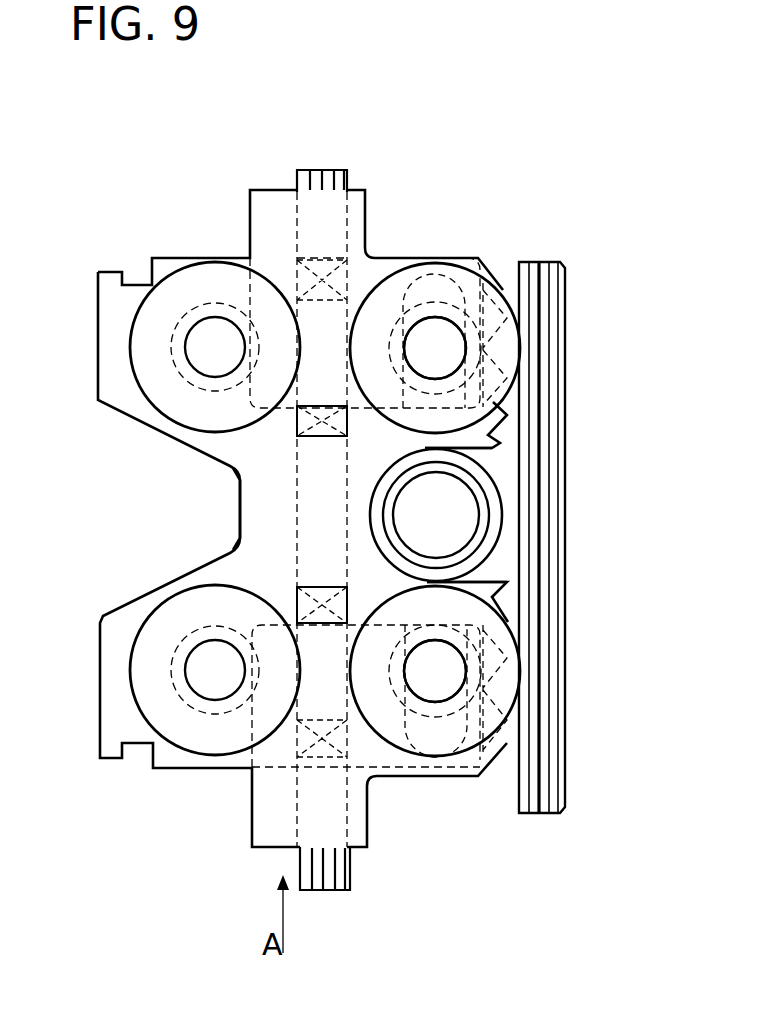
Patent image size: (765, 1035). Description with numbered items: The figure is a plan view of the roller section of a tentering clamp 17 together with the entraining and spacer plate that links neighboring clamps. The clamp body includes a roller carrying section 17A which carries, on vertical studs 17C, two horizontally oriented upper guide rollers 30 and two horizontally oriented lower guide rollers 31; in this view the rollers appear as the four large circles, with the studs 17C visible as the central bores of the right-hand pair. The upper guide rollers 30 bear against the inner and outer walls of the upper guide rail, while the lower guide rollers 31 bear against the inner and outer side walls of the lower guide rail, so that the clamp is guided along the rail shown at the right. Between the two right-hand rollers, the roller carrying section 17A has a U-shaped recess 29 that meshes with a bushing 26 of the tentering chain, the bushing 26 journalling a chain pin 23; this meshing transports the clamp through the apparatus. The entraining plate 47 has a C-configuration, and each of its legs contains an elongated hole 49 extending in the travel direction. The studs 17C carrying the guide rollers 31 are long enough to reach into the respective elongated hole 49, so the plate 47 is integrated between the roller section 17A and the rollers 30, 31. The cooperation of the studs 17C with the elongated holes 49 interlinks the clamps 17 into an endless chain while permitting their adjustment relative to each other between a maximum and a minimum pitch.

The tentering clamp 17 is at (83, 752).
The roller carrying section 17A is at (260, 547).
The stud 17C is at (450, 362).
The chain pin 23 is at (458, 492).
The bushing 26 is at (488, 538).
The U-shaped recess 29 is at (476, 577).
The upper guide roller 30 is at (188, 286).
The lower guide roller 31 is at (207, 740).
The entraining plate 47 is at (352, 218).
The elongated hole 49 is at (440, 287).